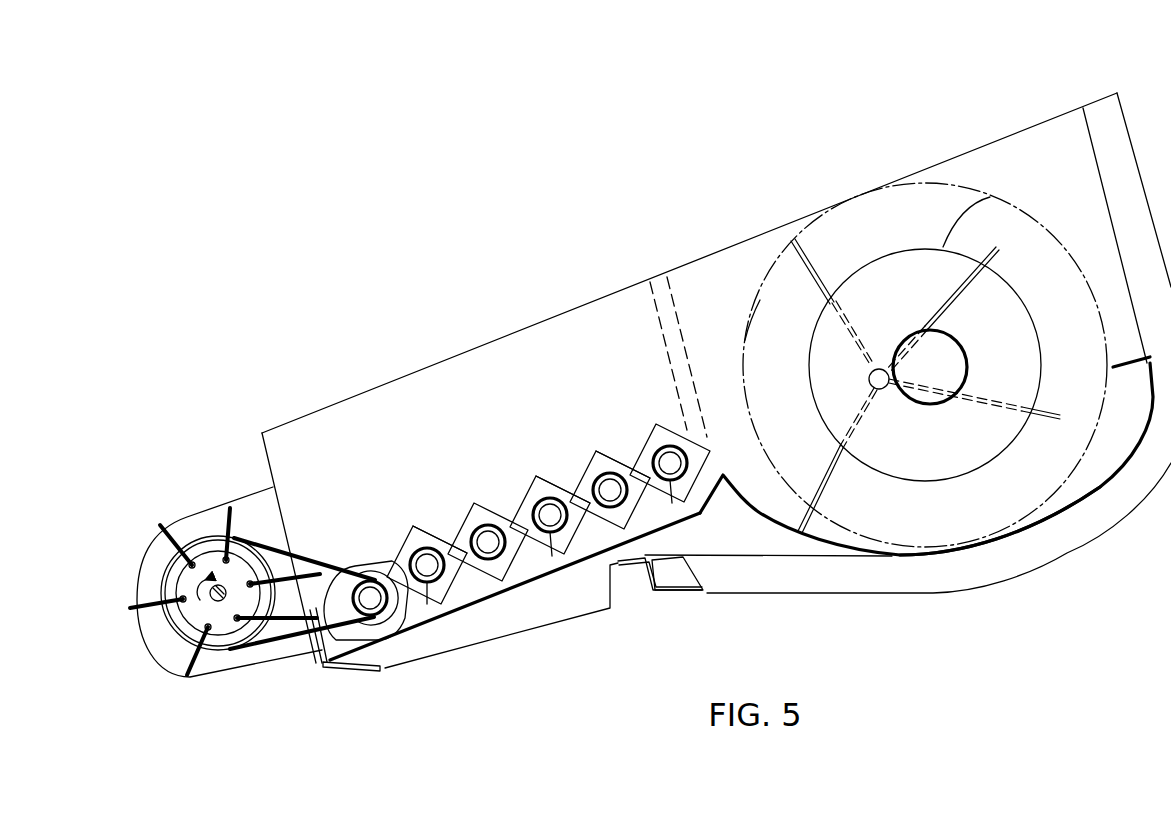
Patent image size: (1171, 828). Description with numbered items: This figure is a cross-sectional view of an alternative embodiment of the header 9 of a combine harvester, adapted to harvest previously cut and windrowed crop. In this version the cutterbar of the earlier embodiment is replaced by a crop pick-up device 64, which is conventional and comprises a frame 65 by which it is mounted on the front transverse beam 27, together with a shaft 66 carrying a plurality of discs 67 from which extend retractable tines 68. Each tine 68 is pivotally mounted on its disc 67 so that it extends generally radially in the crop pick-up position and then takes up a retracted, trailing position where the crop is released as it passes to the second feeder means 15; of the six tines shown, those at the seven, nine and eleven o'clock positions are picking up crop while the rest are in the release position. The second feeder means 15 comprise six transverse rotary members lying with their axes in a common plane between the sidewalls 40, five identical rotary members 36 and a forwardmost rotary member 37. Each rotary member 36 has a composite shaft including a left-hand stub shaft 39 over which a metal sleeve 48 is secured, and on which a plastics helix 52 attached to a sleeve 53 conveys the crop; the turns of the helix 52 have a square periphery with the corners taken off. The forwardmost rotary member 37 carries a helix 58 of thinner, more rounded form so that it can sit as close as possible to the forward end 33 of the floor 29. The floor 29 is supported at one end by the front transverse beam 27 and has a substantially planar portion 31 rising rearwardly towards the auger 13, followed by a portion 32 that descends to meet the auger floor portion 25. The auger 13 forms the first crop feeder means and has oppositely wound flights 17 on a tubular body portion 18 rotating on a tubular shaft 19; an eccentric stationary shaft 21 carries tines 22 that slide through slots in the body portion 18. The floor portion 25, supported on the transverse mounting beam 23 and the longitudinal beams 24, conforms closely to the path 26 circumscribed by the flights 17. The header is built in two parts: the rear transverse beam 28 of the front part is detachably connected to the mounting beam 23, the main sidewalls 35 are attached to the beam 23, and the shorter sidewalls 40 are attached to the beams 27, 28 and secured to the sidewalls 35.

The header 9 is at (793, 212).
The auger 13 is at (978, 182).
The second crop feeder means 15 is at (537, 465).
The flights 17 is at (1062, 262).
The tubular body portion 18 is at (1043, 350).
The tubular shaft 19 is at (961, 367).
The stationary shaft 21 is at (869, 380).
The tines 22 is at (816, 280).
The transverse mounting beam 23 is at (695, 593).
The longitudinal beams 24 is at (908, 583).
The floor portion 25 is at (990, 540).
The path 26 is at (748, 330).
The front transverse beam 27 is at (352, 669).
The rear transverse beam 28 is at (653, 594).
The floor 29 is at (534, 598).
The planar portion 31 is at (547, 580).
The floor portion 32 is at (757, 512).
The forward end 33 is at (318, 665).
The sidewalls 35 is at (758, 238).
The rotary members 36 is at (412, 520).
The forwardmost rotary member 37 is at (345, 567).
The left-hand stub shaft 39 is at (437, 578).
The sidewalls 40 is at (412, 378).
The metal sleeve 48 is at (372, 614).
The helix 52 is at (468, 524).
The sleeve 53 is at (427, 585).
The helix 58 is at (368, 564).
The crop pick-up device 64 is at (182, 514).
The frame 65 is at (263, 645).
The shaft 66 is at (218, 603).
The discs 67 is at (222, 635).
The retractable tines 68 is at (228, 512).